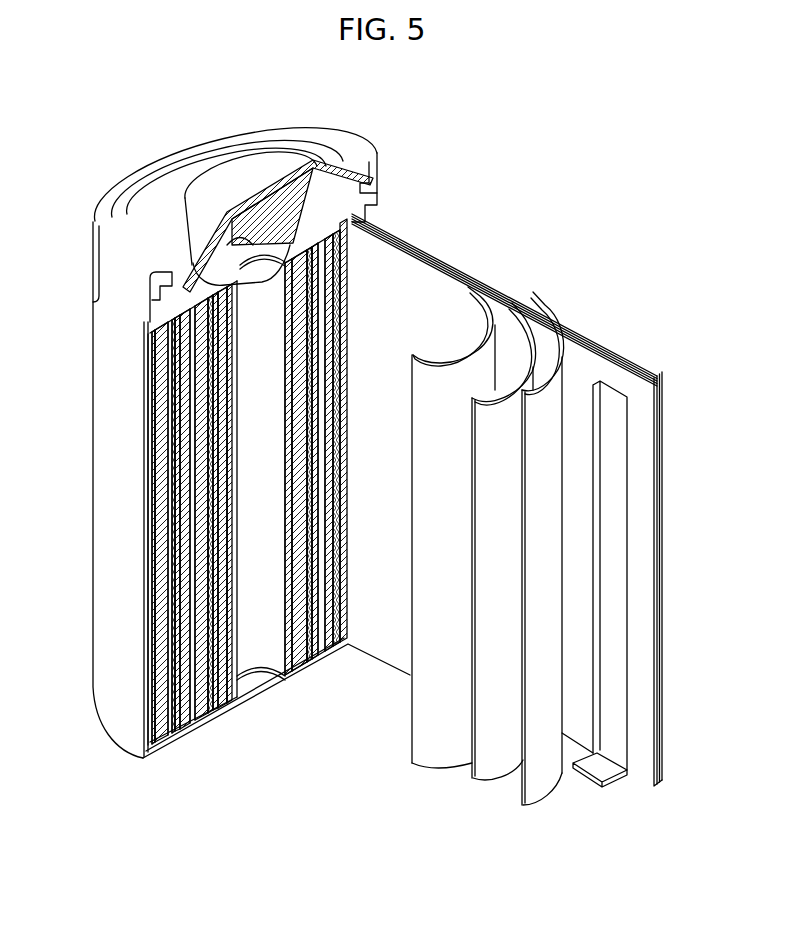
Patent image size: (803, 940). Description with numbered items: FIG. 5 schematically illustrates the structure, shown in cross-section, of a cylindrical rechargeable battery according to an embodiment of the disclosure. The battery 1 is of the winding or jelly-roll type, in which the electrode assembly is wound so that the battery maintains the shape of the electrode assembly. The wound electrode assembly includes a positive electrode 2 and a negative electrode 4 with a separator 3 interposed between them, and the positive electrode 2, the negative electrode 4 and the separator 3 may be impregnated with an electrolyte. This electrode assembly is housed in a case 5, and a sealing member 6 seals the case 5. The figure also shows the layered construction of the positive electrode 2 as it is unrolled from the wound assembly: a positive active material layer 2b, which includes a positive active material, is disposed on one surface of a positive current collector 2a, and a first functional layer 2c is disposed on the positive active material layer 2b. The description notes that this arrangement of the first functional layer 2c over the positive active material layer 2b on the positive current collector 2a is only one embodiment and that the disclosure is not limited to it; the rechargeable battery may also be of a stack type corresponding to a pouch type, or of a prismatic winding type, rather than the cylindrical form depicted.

The battery 1 is at (434, 128).
The positive electrode 2 is at (676, 330).
The positive current collector 2a is at (607, 343).
The positive active material layer 2b is at (621, 360).
The first functional layer 2c is at (643, 370).
The separator 3 is at (445, 303).
The negative electrode 4 is at (507, 335).
The case 5 is at (102, 505).
The sealing member 6 is at (250, 154).